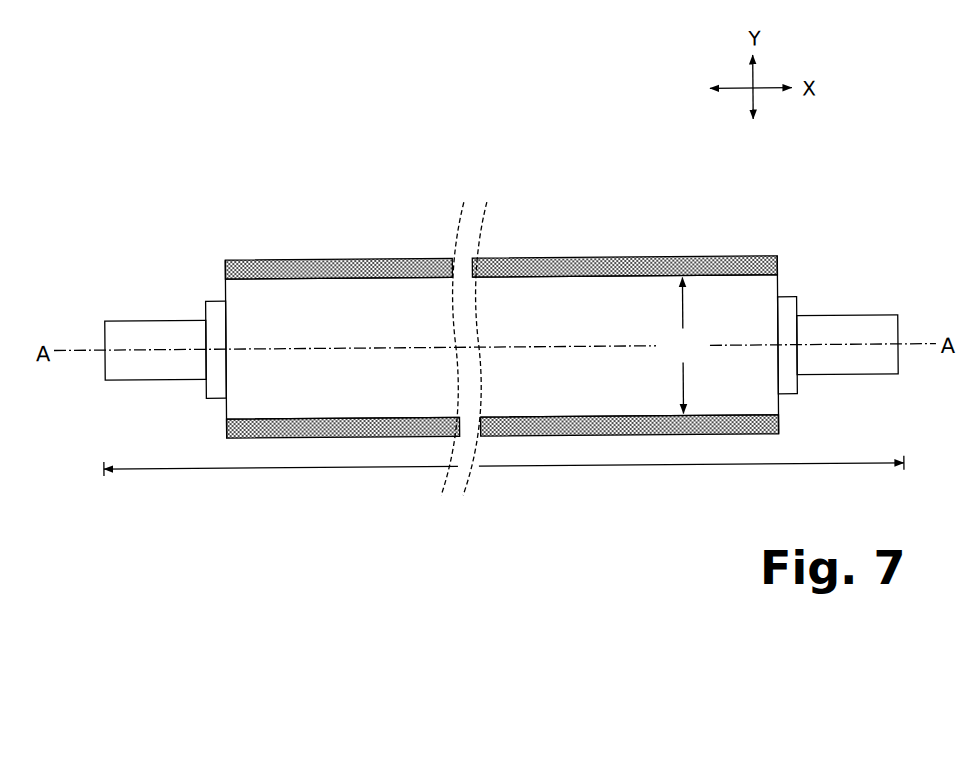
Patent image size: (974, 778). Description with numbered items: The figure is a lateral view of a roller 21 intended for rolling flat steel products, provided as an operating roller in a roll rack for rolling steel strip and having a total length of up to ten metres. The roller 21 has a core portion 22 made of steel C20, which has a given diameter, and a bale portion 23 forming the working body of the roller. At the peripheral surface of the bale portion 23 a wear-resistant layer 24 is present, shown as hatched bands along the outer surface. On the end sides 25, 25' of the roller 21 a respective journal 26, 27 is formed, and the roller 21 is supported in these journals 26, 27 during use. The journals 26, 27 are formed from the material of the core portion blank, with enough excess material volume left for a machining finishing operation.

The roller 21 is at (332, 208).
The core portion 22 is at (571, 328).
The bale portion 23 is at (606, 239).
The wear-resistant layer 24 is at (255, 265).
The end side 25 is at (203, 305).
The end side 25' is at (795, 301).
The journal 26 is at (152, 335).
The journal 27 is at (858, 335).